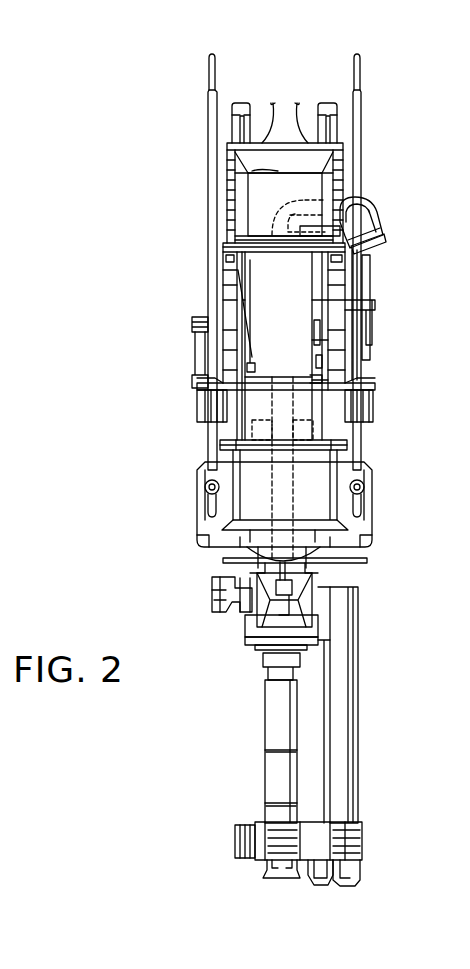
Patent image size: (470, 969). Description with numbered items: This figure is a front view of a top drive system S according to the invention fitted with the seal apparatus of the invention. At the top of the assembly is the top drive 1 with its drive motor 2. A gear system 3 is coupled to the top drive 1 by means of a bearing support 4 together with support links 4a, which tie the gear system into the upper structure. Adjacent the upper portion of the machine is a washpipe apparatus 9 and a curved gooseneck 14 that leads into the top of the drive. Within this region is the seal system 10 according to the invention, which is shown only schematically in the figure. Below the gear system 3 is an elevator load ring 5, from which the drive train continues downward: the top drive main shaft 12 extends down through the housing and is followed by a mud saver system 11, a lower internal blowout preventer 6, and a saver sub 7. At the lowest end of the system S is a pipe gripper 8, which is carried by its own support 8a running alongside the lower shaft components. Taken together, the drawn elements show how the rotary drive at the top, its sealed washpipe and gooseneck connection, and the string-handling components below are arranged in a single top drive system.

The system S is at (176, 211).
The top drive 1 is at (232, 268).
The drive motor 2 is at (260, 311).
The gear system 3 is at (200, 405).
The bearing support 4 is at (255, 522).
The support links 4a is at (212, 440).
The elevator load ring 5 is at (250, 632).
The lower internal blowout preventer 6 is at (272, 775).
The saver sub 7 is at (272, 815).
The pipe gripper 8 is at (245, 842).
The support 8a is at (355, 753).
The washpipe apparatus 9 is at (290, 232).
The seal system 10 is at (303, 422).
The mud saver system 11 is at (267, 707).
The top drive main shaft 12 is at (290, 502).
The gooseneck 14 is at (376, 228).